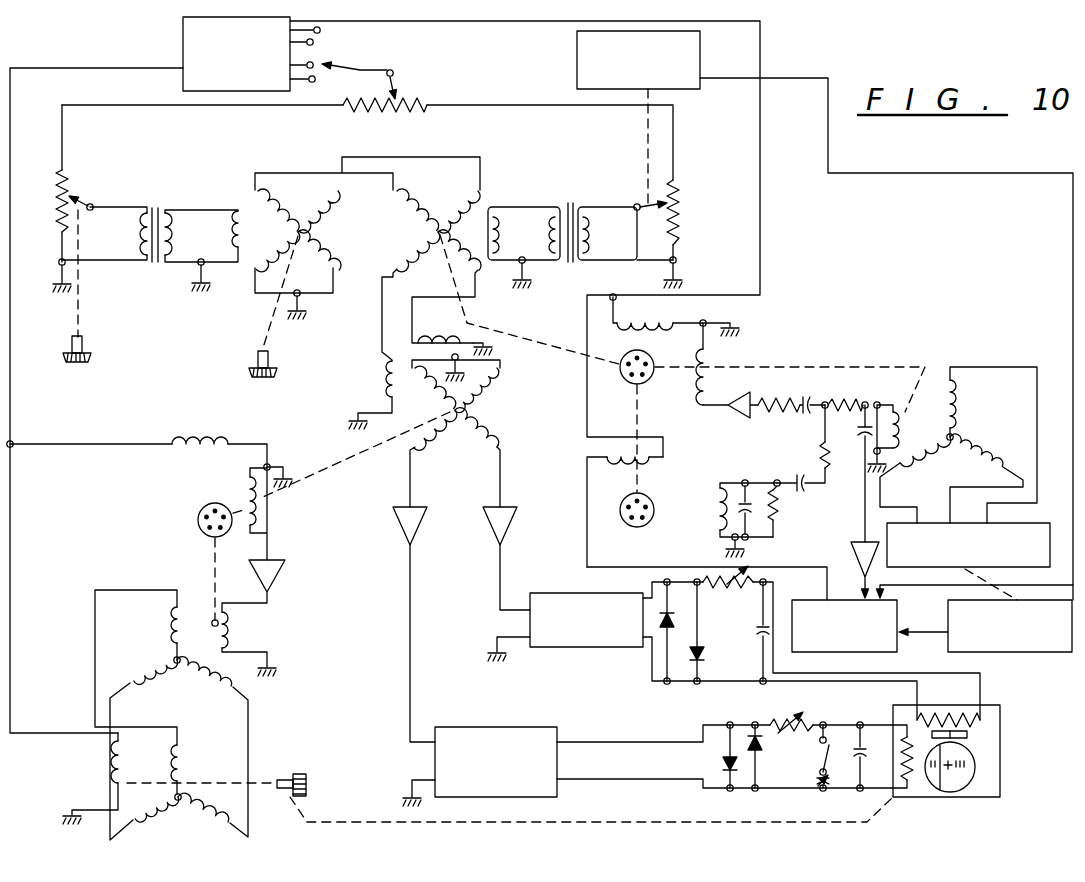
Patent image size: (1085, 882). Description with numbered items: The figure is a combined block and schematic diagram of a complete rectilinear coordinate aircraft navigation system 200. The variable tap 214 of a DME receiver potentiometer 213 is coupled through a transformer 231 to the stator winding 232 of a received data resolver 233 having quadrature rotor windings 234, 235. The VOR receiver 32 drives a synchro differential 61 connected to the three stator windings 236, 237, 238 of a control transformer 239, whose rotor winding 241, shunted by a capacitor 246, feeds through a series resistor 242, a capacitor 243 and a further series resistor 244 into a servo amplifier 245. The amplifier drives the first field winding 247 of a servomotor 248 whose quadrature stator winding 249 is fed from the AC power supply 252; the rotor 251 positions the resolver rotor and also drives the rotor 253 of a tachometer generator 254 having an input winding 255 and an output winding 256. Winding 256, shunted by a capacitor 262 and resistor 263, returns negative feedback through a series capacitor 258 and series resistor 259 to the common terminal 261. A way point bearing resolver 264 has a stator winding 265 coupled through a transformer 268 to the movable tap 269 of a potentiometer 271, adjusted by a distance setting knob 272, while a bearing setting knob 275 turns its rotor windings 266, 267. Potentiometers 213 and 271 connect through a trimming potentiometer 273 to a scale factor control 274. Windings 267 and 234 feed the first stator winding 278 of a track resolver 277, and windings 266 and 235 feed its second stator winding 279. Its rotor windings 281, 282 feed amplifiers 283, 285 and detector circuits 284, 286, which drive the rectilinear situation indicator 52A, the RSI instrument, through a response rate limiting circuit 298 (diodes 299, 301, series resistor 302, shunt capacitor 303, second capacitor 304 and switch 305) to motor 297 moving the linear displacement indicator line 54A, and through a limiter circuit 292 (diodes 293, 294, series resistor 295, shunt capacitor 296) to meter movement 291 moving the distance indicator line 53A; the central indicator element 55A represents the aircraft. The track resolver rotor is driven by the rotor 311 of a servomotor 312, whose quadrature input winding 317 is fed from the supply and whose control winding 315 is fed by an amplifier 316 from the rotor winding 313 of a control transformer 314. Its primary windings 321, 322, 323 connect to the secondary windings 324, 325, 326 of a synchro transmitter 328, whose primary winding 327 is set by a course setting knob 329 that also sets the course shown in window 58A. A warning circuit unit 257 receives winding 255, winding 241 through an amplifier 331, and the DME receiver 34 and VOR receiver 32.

The AC power supply 252 is at (183, 33).
The scale factor control 274 is at (346, 62).
The trimming potentiometer 273 is at (405, 103).
The DME receiver 34 is at (703, 62).
The aircraft navigation system 200 is at (780, 275).
The potentiometer 271 is at (62, 183).
The movable tap 269 is at (90, 204).
The stator winding 265 is at (232, 244).
The transformer 268 is at (152, 264).
The way point bearing resolver 264 is at (279, 234).
The rotor winding 267 is at (335, 200).
The rotor winding 266 is at (320, 262).
The rotor winding 234 is at (405, 243).
The rotor winding 235 is at (443, 190).
The second stator winding 279 is at (457, 333).
The stator winding 232 is at (490, 264).
The transformer 231 is at (575, 264).
The variable tap 214 is at (625, 232).
The DME receiver potentiometer 213 is at (644, 225).
The received data resolver 233 is at (580, 223).
The quadrature stator winding 249 is at (648, 330).
The rotor 251 is at (625, 379).
The servo amplifier 245 is at (724, 414).
The first field winding 247 is at (727, 390).
The servomotor 248 is at (786, 380).
The series resistor 244 is at (784, 393).
The capacitor 243 is at (827, 393).
The series resistor 242 is at (844, 403).
The series resistor 259 is at (812, 452).
The common terminal 261 is at (871, 431).
The capacitor 246 is at (826, 455).
The rotor winding 241 is at (899, 425).
The series capacitor 258 is at (800, 490).
The amplifier 331 is at (860, 540).
The resistor 263 is at (778, 517).
The capacitor 262 is at (755, 540).
The output winding 256 is at (718, 510).
The tachometer generator 254 is at (750, 496).
The input winding 255 is at (614, 460).
The rotor 253 is at (624, 529).
The stator winding 236 is at (954, 412).
The stator winding 237 is at (986, 456).
The stator winding 238 is at (927, 451).
The control transformer 239 is at (968, 400).
The synchro differential 61 is at (1062, 522).
The VOR receiver 32 is at (1007, 653).
The warning circuit unit 257 is at (874, 653).
The shunt capacitor 296 is at (767, 584).
The series resistor 295 is at (730, 587).
The limiter circuit 292 is at (753, 644).
The diode 293 is at (664, 636).
The diode 294 is at (693, 662).
The diode 301 is at (741, 721).
The series resistor 302 is at (800, 712).
The switch 305 is at (829, 736).
The shunt capacitor 303 is at (865, 745).
The response rate limiting circuit 298 is at (732, 749).
The diode 299 is at (723, 766).
The second capacitor 304 is at (821, 784).
The meter movement 291 is at (968, 711).
The motor 297 is at (910, 784).
The window 58A is at (967, 731).
The rectilinear situation indicator 52A is at (972, 743).
The distance indicator line 53A is at (977, 755).
The central indicator element 55A is at (977, 767).
The RSI instrument RSI is at (975, 762).
The linear displacement indicator line 54A is at (943, 787).
The detector circuit 284 is at (476, 727).
The detector circuit 286 is at (546, 648).
The amplifier 283 is at (404, 523).
The amplifier 285 is at (508, 514).
The rotor winding 281 is at (488, 383).
The rotor winding 282 is at (478, 424).
The first stator winding 278 is at (382, 388).
The track resolver 277 is at (287, 430).
The quadrature input winding 317 is at (201, 455).
The servomotor 312 is at (193, 506).
The rotor 311 is at (197, 523).
The control winding 315 is at (262, 514).
The amplifier 316 is at (284, 579).
The rotor winding 313 is at (240, 637).
The primary winding 321 is at (172, 621).
The primary winding 322 is at (137, 673).
The primary winding 323 is at (188, 678).
The secondary winding 324 is at (181, 773).
The primary winding 327 is at (132, 774).
The secondary winding 325 is at (171, 809).
The secondary winding 326 is at (240, 810).
The course setting knob 329 is at (308, 788).
The synchro transmitter 328 is at (83, 784).
The control transformer 314 is at (494, 716).
The distance setting knob 272 is at (84, 352).
The bearing setting knob 275 is at (252, 359).